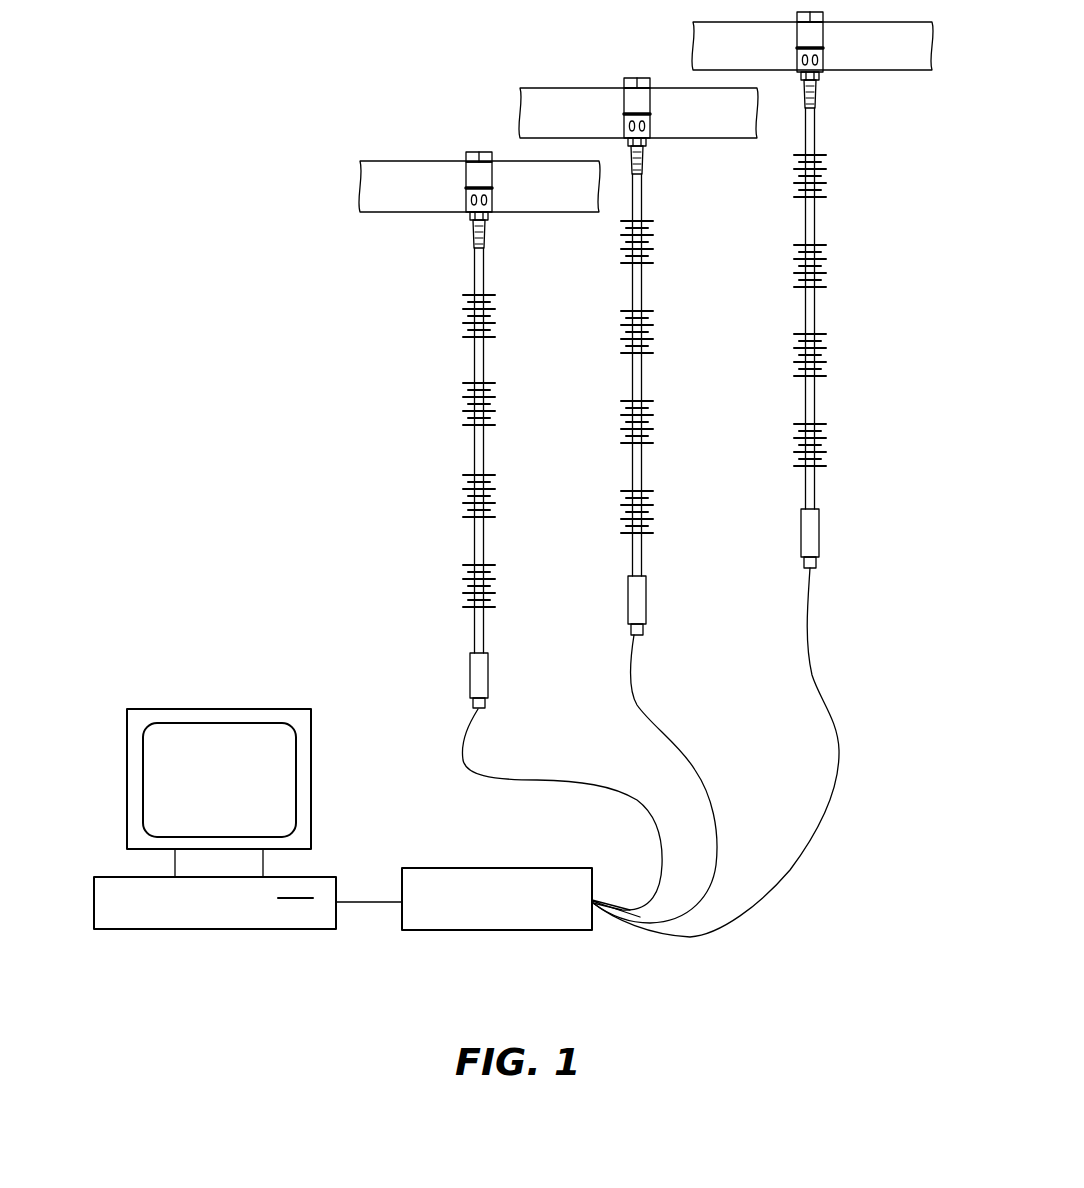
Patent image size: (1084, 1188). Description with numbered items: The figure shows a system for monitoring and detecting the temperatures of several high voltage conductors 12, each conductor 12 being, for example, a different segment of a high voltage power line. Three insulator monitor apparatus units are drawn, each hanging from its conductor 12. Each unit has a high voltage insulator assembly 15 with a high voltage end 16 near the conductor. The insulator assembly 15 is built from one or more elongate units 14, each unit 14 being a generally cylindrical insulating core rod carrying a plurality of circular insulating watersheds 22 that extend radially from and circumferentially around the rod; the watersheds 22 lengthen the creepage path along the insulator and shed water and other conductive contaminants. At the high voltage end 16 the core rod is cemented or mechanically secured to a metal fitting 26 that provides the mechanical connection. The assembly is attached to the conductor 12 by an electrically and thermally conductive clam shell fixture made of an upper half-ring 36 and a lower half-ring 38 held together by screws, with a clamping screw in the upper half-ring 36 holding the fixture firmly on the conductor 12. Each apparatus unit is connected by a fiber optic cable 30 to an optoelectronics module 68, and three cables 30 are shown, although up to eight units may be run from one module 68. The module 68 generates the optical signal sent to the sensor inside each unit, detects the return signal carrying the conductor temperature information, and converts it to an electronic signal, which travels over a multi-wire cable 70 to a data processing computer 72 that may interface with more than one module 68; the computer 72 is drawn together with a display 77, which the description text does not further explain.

The high voltage conductor 12 is at (365, 178).
The elongate unit 14 is at (484, 358).
The high voltage insulator assembly 15 is at (638, 360).
The high voltage end 16 is at (474, 258).
The circular insulating watersheds 22 is at (466, 322).
The metal fitting 26 is at (474, 240).
The fiber optic cable 30 is at (538, 777).
The upper half-ring 36 is at (468, 170).
The lower half-ring 38 is at (492, 192).
The optoelectronics module 68 is at (463, 868).
The multi-wire cable 70 is at (356, 900).
The data processing computer 72 is at (160, 888).
The display monitor 77 is at (127, 755).